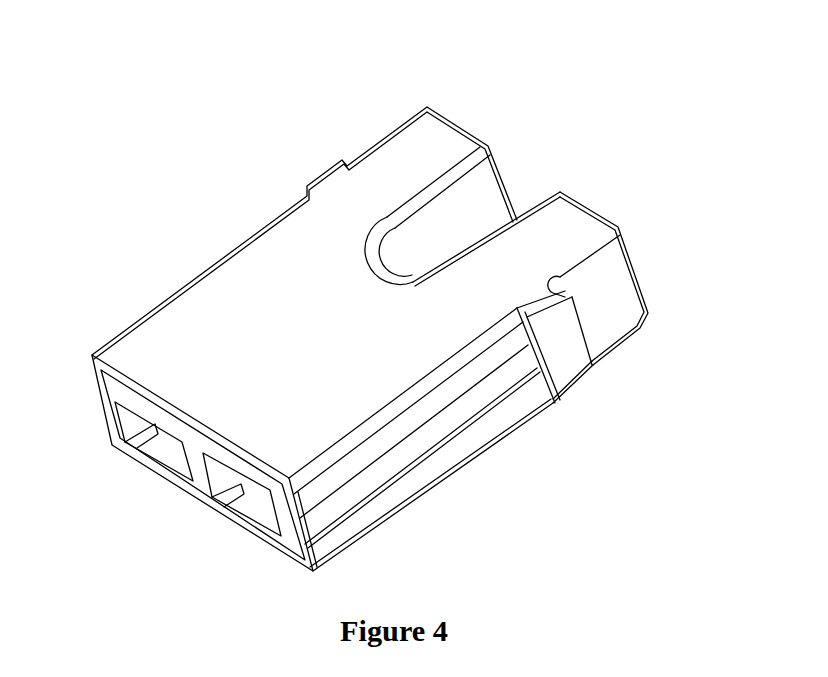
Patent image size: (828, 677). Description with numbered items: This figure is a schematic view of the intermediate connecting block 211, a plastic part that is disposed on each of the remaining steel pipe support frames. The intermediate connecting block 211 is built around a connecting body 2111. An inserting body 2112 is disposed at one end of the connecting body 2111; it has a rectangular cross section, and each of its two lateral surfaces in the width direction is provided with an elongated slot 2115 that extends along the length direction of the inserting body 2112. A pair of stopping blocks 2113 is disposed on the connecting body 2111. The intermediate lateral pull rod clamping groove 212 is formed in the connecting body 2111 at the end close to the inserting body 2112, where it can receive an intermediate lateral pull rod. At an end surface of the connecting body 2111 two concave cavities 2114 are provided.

The intermediate connecting block 211 is at (182, 140).
The connecting body 2111 is at (200, 320).
The inserting body 2112 is at (415, 140).
The intermediate lateral pull rod clamping groove 212 is at (530, 188).
The stopping block 2113 is at (580, 364).
The concave cavity 2114 is at (248, 505).
The elongated slot 2115 is at (428, 442).